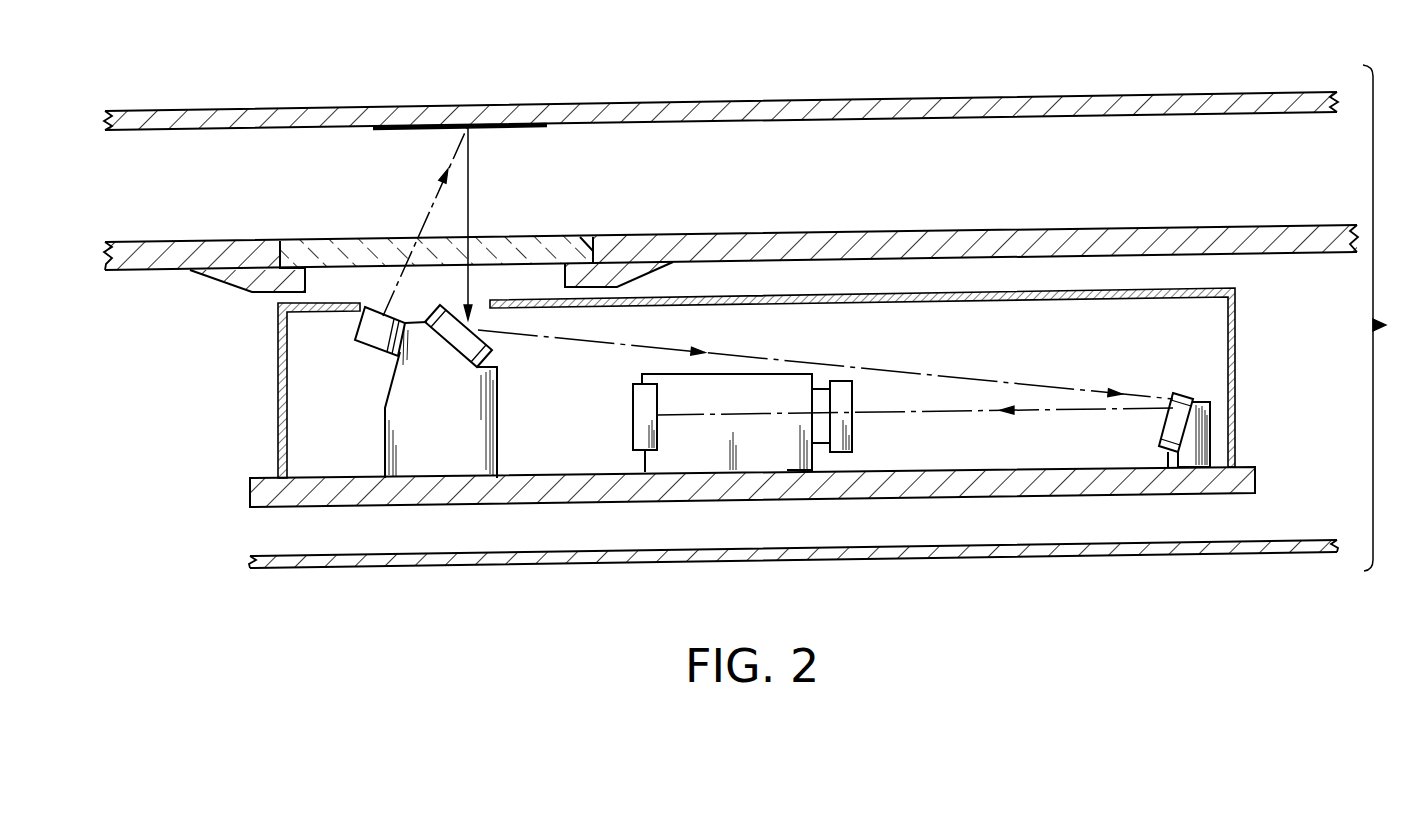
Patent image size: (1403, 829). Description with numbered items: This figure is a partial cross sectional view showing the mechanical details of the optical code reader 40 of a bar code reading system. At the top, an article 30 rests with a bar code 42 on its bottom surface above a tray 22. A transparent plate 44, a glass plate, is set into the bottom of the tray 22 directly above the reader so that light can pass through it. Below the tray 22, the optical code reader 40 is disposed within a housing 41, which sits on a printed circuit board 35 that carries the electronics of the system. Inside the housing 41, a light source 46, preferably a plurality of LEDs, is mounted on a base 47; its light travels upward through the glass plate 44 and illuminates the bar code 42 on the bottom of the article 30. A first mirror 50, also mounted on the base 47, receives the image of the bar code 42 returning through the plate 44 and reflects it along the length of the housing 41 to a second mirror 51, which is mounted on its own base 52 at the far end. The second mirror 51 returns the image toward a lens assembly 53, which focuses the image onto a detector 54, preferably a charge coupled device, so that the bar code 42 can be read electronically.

The article 30 is at (765, 100).
The bar code 42 is at (527, 130).
The tray 22 is at (850, 238).
The transparent plate 44 is at (365, 238).
The housing 41 is at (1237, 323).
The printed circuit board 35 is at (862, 496).
The optical code reader 40 is at (579, 430).
The light source 46 is at (353, 332).
The base 47 is at (388, 436).
The first mirror 50 is at (493, 351).
The second mirror 51 is at (1188, 395).
The base 52 is at (1212, 436).
The lens assembly 53 is at (853, 450).
The detector 54 is at (636, 440).